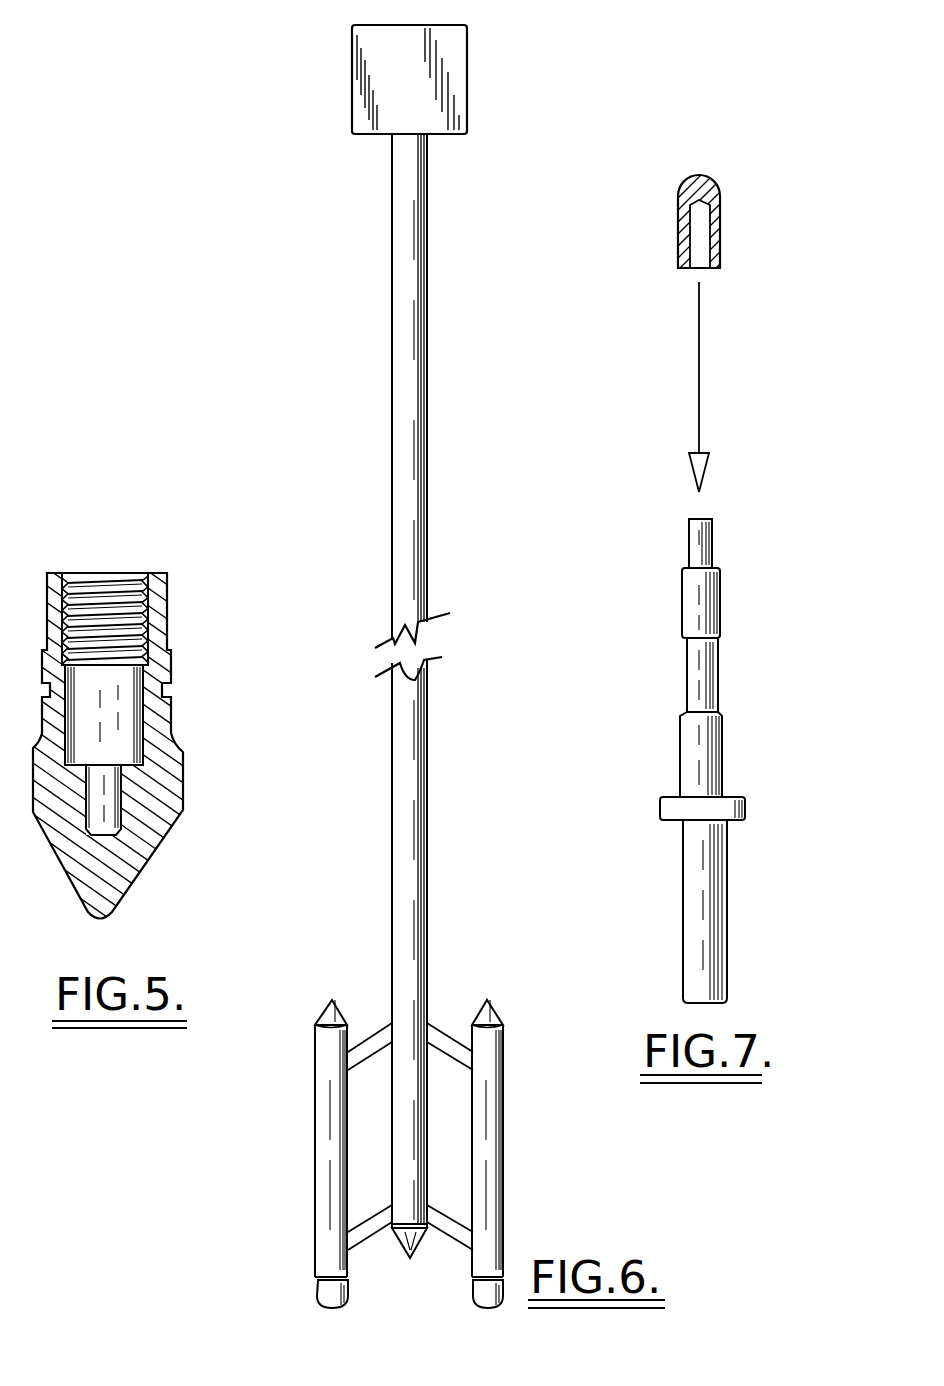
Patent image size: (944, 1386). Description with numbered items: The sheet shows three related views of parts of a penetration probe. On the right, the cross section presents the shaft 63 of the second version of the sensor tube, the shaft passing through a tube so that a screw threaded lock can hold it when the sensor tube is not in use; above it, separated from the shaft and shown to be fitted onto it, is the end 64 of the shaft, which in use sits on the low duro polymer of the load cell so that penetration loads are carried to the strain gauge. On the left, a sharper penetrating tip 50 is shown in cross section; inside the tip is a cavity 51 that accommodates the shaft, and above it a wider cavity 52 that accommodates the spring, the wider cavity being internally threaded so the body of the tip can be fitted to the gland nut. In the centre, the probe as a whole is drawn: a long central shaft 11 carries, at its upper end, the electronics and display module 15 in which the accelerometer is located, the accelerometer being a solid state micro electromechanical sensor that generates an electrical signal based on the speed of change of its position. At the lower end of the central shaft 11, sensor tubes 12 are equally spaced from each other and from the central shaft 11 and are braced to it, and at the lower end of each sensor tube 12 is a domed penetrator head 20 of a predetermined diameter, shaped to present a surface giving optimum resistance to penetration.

In FIG. 6, the central shaft 11 is at (428, 797).
In FIG. 6, the sensor tube 12 is at (315, 1185).
In FIG. 6, the electronics and display module 15 is at (467, 130).
In FIG. 6, the penetrator head 20 is at (410, 1258).
In FIG. 5, the tip 50 is at (137, 860).
In FIG. 5, the cavity 51 is at (120, 732).
In FIG. 5, the cavity 52 is at (130, 585).
In FIG. 7, the shaft 63 is at (727, 957).
In FIG. 7, the end of the shaft 64 is at (720, 242).